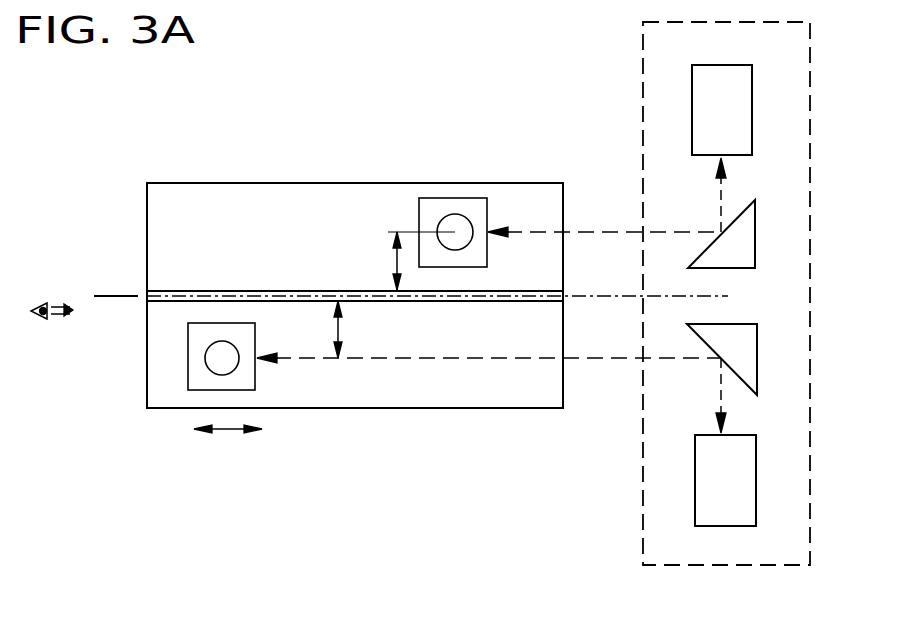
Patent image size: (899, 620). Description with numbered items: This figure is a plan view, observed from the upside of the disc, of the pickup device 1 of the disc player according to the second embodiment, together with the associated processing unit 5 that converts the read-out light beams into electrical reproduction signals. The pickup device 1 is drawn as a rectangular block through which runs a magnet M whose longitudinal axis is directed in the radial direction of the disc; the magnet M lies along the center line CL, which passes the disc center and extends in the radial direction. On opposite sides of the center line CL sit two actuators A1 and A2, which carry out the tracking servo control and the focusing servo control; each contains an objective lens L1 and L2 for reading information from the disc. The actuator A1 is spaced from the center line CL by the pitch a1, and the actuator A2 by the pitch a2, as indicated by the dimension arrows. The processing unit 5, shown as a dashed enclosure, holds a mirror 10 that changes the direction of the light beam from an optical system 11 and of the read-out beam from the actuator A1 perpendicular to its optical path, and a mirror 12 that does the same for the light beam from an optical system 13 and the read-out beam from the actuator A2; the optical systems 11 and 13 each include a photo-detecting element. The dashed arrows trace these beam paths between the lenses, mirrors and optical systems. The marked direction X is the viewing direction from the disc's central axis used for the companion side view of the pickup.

The pickup device 1 is at (380, 410).
The processing unit 5 is at (681, 566).
The mirror 10 is at (757, 256).
The optical system 11 is at (730, 66).
The mirror 12 is at (768, 348).
The optical system 13 is at (767, 470).
The magnet M is at (440, 302).
The center line CL is at (108, 290).
The direction X is at (55, 322).
The actuator A1 is at (451, 198).
The actuator A2 is at (220, 323).
The objective lens L1 is at (470, 240).
The objective lens L2 is at (236, 368).
The pitch a1 is at (411, 261).
The pitch a2 is at (352, 329).